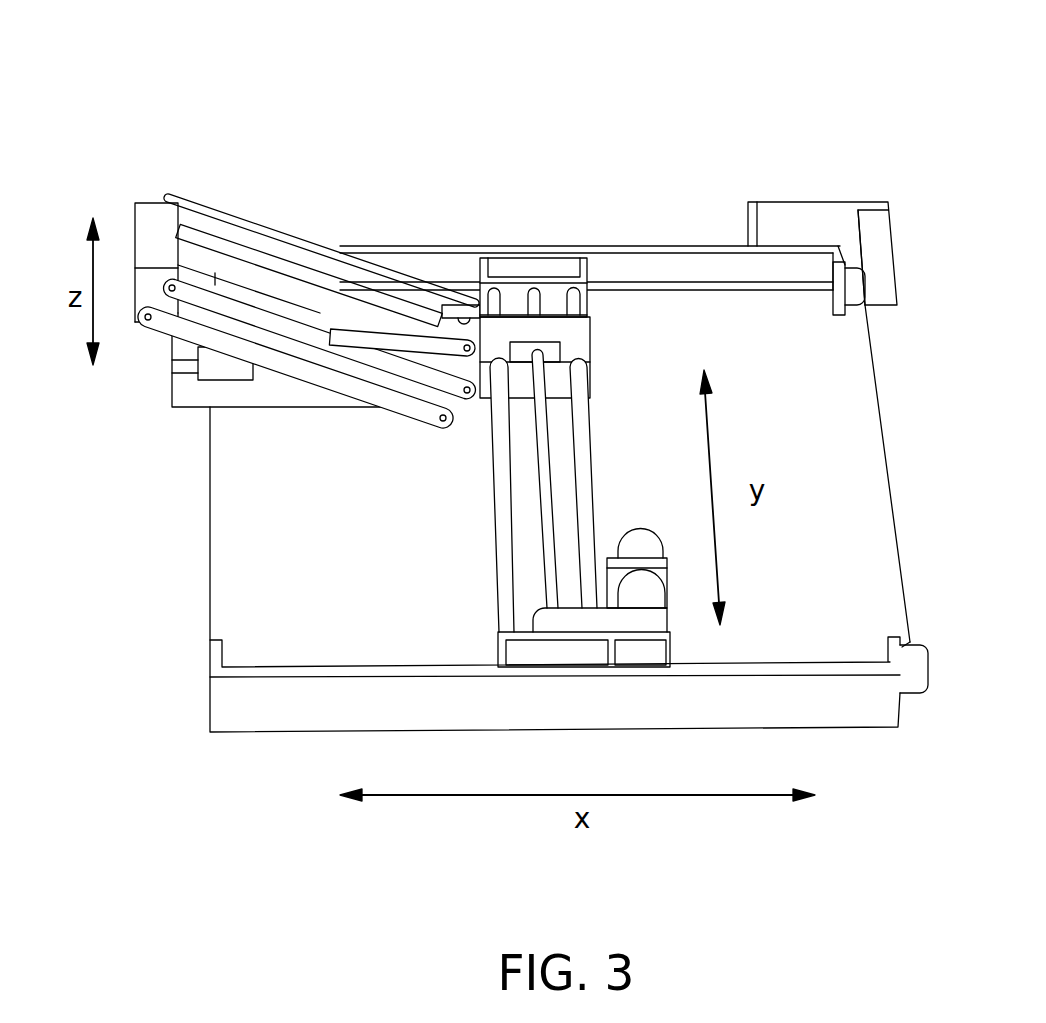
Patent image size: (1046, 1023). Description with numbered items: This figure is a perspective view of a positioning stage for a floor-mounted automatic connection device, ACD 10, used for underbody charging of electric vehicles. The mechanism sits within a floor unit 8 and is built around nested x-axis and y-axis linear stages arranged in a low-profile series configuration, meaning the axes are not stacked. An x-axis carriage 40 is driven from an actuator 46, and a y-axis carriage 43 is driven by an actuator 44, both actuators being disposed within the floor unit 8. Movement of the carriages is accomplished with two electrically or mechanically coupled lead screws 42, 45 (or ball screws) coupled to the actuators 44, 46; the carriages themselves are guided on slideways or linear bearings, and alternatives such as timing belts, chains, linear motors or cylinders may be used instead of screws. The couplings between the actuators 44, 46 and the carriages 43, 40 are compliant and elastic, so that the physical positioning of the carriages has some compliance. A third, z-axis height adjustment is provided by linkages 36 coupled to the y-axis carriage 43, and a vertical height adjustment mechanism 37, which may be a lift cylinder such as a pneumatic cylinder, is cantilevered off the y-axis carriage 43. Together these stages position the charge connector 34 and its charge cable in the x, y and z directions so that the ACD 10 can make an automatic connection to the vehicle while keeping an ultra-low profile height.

The floor unit 8 is at (313, 712).
The ACD 10 is at (662, 125).
The charge connector 34 is at (147, 213).
The linkages 36 is at (305, 238).
The vertical height adjustment mechanism 37 is at (250, 385).
The x-axis carriage 40 is at (503, 577).
The lead screw 42 is at (497, 478).
The y-axis carriage 43 is at (568, 335).
The actuator 44 is at (648, 595).
The lead screw 45 is at (765, 290).
The actuator 46 is at (825, 215).